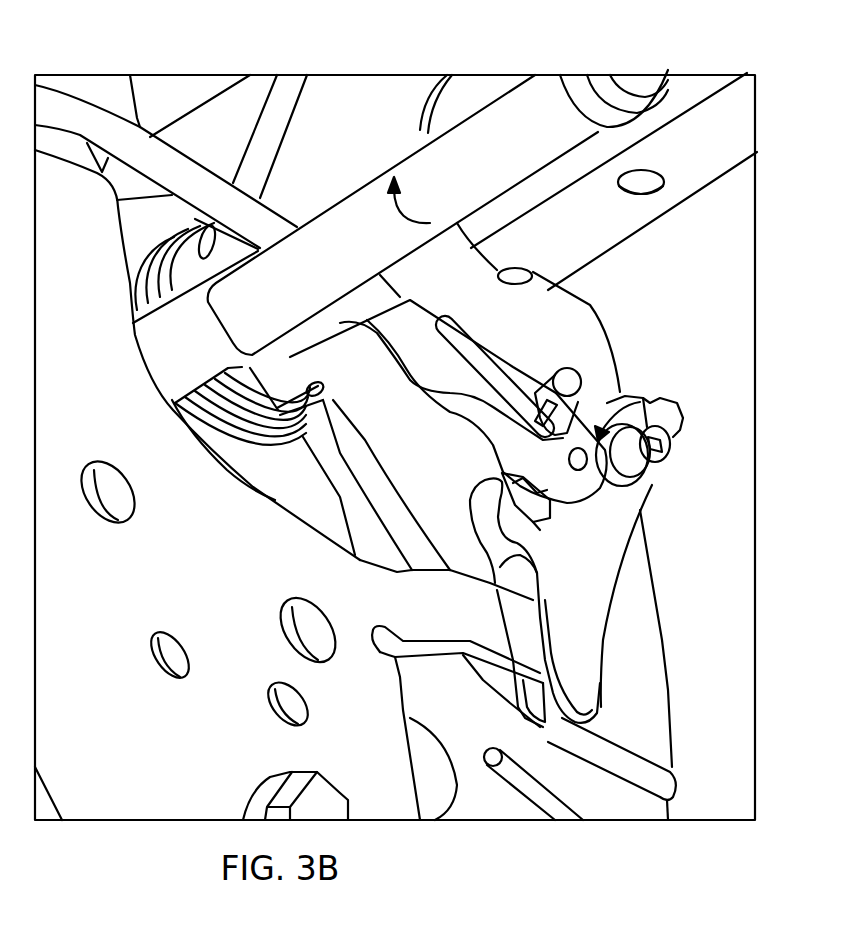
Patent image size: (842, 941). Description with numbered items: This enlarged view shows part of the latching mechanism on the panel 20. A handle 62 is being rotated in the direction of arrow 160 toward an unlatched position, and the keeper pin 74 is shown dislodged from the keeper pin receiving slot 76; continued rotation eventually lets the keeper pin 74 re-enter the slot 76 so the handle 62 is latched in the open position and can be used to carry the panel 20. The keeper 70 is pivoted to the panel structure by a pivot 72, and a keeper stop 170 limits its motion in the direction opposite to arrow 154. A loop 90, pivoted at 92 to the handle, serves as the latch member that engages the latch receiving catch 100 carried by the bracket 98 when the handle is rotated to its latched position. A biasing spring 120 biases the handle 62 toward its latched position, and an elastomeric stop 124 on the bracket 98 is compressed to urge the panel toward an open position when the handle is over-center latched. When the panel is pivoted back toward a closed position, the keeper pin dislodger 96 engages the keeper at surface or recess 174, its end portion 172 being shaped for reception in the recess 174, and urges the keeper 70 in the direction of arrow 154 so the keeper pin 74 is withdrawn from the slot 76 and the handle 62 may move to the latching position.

The panel 20 is at (667, 302).
The handle 62 is at (472, 162).
The keeper 70 is at (590, 667).
The pivot 72 is at (668, 457).
The keeper pin 74 is at (541, 512).
The keeper pin receiving slot 76 is at (513, 477).
The loop 90 is at (404, 303).
The loop pivot 92 is at (545, 372).
The keeper pin dislodger 96 is at (493, 632).
The bracket 98 is at (192, 597).
The latch receiving catch 100 is at (64, 150).
The biasing spring 120 is at (167, 245).
The elastomeric stop 124 is at (435, 778).
The arrow 154 is at (623, 388).
The arrow 160 is at (403, 217).
The keeper stop 170 is at (672, 416).
The end portion 172 is at (545, 720).
The recess 174 is at (517, 576).